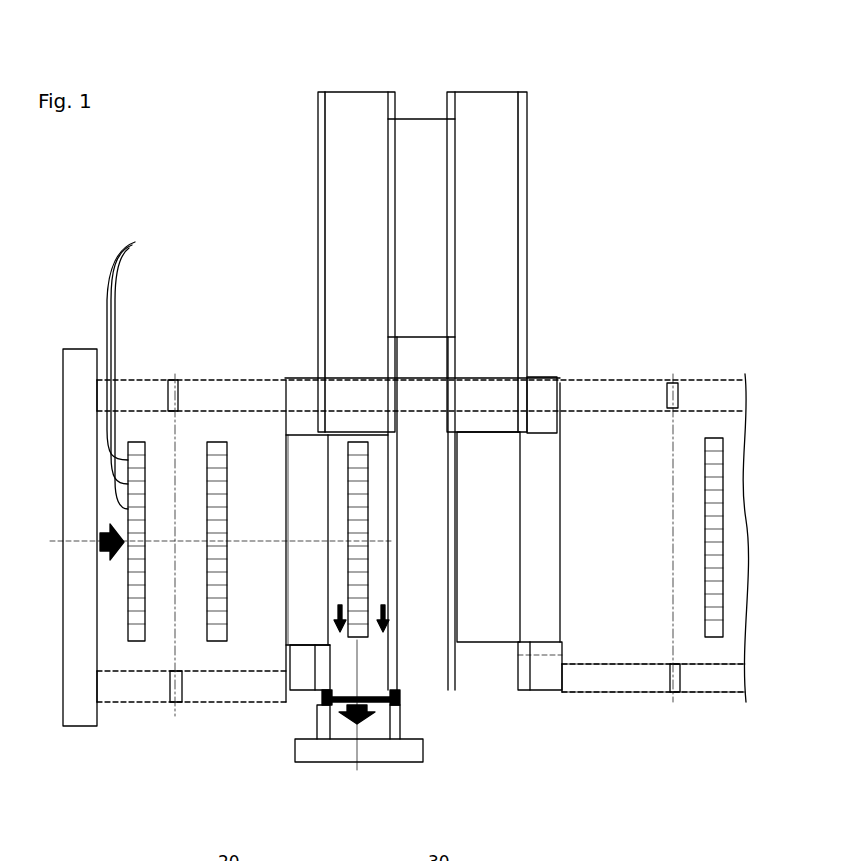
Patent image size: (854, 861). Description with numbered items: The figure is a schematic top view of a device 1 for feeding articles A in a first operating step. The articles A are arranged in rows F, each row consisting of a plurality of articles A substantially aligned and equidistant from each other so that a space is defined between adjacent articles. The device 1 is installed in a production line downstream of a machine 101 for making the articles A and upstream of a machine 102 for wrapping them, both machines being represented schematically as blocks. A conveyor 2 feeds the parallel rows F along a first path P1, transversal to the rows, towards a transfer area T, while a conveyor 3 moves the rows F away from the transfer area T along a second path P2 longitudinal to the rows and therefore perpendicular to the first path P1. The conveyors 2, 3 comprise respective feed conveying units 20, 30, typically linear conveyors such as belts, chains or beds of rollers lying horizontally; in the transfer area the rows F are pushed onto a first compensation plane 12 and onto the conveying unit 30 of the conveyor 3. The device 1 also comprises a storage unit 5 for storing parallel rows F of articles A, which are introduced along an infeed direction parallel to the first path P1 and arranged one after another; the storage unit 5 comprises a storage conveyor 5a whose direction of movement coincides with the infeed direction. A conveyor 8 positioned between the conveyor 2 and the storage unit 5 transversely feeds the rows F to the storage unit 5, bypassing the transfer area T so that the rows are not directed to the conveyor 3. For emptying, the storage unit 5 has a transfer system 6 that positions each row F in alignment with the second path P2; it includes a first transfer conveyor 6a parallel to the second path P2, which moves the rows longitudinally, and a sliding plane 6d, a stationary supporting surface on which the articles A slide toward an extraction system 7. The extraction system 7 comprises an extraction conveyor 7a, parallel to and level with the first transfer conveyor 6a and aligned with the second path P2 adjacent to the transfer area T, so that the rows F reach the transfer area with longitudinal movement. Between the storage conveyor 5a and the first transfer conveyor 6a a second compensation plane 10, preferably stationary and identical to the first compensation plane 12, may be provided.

The device for feeding articles 1 is at (220, 215).
The conveyor 2 is at (157, 362).
The conveyor 3 is at (285, 732).
The storage unit 5 is at (720, 696).
The storage conveyor 5a is at (700, 670).
The transfer system 6 is at (530, 148).
The first transfer conveyor 6a is at (522, 205).
The sliding plane 6d is at (420, 138).
The extraction system 7 is at (316, 150).
The extraction conveyor 7a is at (325, 233).
The conveyor 8 is at (548, 690).
The second compensation plane 10 is at (548, 457).
The first compensation plane 12 is at (300, 470).
The feed conveying unit 20 is at (165, 644).
The feed conveying unit 30 is at (285, 678).
The machine for making the articles 101 is at (78, 458).
The machine for wrapping the articles 102 is at (365, 750).
The articles A is at (127, 373).
The rows F is at (136, 440).
The transfer area T is at (434, 434).
The first path P1 is at (100, 541).
The second path P2 is at (384, 606).